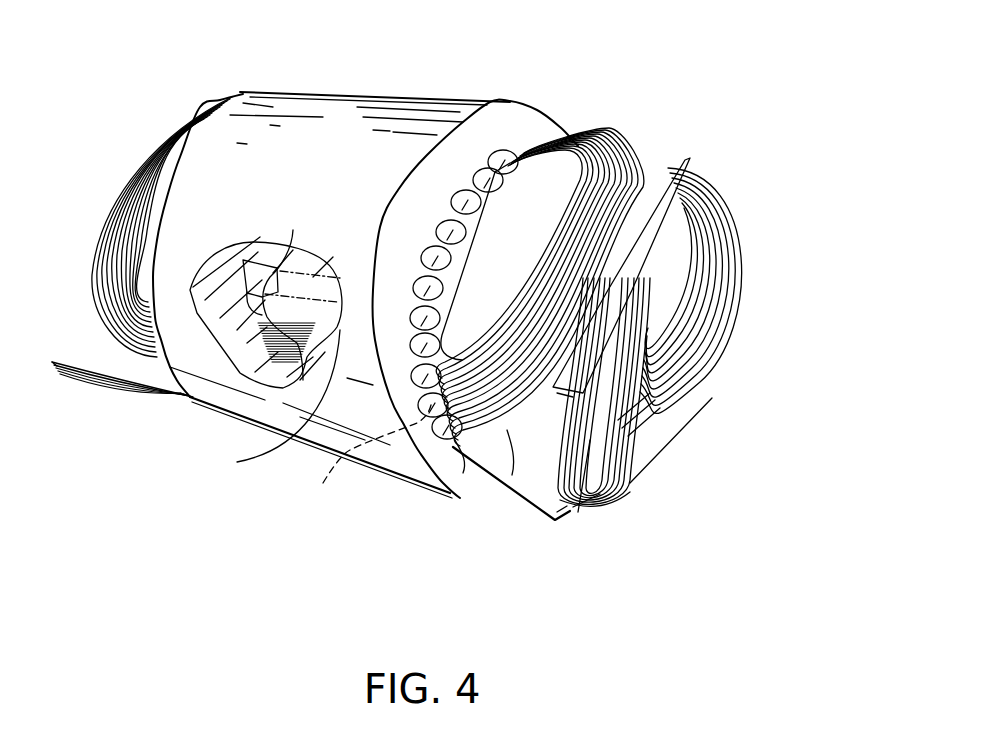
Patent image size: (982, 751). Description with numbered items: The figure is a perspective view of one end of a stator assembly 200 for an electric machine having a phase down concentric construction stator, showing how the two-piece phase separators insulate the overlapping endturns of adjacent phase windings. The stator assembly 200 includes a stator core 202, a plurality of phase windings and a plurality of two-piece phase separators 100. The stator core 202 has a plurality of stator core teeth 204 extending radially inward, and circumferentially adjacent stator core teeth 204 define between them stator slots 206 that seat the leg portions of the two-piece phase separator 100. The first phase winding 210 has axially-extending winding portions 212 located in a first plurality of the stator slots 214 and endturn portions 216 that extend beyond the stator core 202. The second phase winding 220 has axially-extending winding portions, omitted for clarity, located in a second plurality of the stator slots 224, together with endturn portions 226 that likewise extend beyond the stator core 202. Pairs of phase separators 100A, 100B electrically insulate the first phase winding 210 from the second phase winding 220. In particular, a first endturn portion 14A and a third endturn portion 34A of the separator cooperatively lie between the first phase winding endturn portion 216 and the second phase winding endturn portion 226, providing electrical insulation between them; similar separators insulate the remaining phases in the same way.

The stator assembly 200 is at (243, 497).
The stator core 202 is at (225, 388).
The stator core teeth 204 is at (264, 403).
The stator slots 206 is at (368, 458).
The first phase winding 210 is at (503, 423).
The axially-extending winding portions 212 is at (463, 473).
The first plurality of stator slots 214 is at (286, 292).
The endturn portions 216 is at (605, 300).
The second phase winding 220 is at (602, 496).
The second plurality of stator slots 224 is at (465, 180).
The endturn portions 226 is at (622, 423).
The two-piece phase separator 100 is at (645, 248).
The phase separator 100A is at (594, 262).
The phase separator 100B is at (577, 513).
The first endturn portion 14A is at (523, 261).
The third endturn portion 34A is at (527, 460).